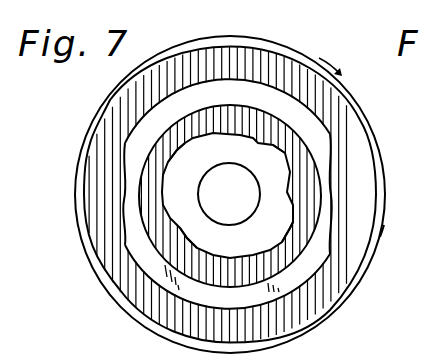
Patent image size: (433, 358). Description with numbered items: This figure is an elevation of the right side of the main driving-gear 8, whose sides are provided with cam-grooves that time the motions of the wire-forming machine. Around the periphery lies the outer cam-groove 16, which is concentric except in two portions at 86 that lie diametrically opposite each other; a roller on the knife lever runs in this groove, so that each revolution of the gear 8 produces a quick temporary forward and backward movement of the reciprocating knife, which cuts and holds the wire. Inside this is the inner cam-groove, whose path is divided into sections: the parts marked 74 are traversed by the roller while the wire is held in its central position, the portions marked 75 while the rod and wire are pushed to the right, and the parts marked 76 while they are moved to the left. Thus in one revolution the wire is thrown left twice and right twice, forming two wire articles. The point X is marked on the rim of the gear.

The main driving-gear 8 is at (357, 106).
The outer cam-groove 16 is at (151, 99).
The non-concentric portions of groove 16 86 is at (228, 194).
The middle-position parts of groove 17 74 is at (222, 120).
The right-throw portions of groove 17 75 is at (163, 145).
The left-throw portions of groove 17 76 is at (277, 148).
The reference point X is at (382, 231).